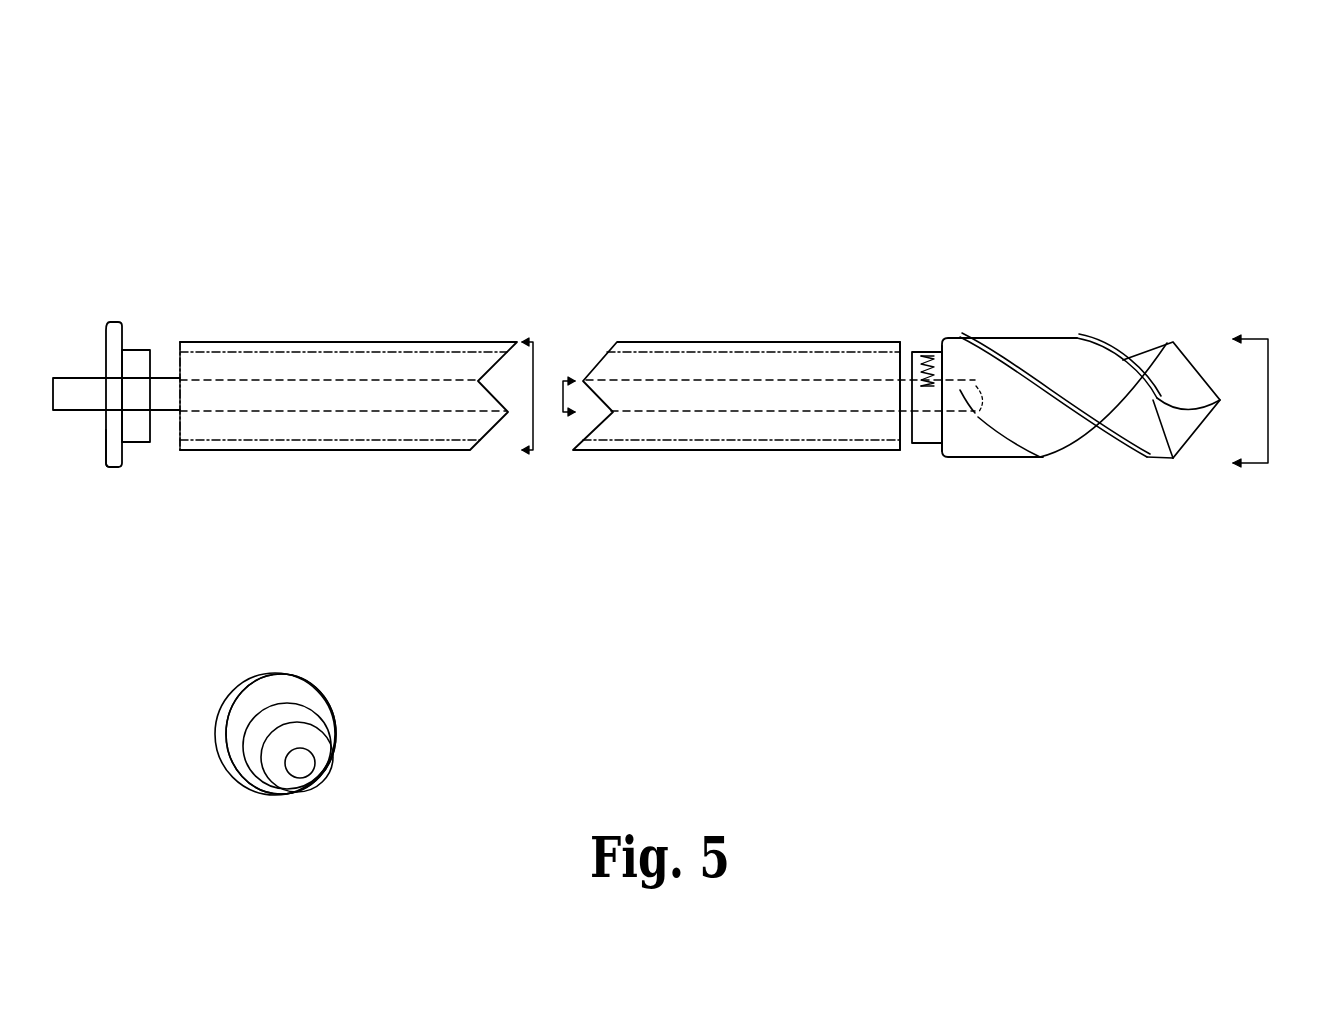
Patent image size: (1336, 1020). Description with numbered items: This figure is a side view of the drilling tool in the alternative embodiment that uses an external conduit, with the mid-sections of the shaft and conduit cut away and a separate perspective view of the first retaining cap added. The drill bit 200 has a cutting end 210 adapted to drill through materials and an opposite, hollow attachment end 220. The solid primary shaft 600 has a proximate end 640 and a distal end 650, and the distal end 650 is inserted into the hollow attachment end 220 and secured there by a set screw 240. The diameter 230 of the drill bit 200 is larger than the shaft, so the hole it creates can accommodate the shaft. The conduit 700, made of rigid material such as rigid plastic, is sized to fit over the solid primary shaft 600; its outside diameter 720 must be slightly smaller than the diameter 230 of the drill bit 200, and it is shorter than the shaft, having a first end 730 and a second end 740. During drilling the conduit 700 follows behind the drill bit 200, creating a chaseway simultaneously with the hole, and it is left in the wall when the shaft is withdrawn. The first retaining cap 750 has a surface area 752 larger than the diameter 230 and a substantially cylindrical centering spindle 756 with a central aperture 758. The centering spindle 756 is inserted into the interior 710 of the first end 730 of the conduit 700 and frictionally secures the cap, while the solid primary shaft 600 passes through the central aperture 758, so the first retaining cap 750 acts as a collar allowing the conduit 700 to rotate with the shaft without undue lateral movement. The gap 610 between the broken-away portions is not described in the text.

The drill bit 200 is at (1105, 445).
The cutting end 210 is at (1172, 356).
The attachment end 220 is at (927, 447).
The diameter of the drill bit 230 is at (1278, 401).
The set screw 240 is at (928, 355).
The solid primary shaft 600 is at (312, 398).
The gap 610 is at (560, 403).
The proximate end 640 is at (67, 395).
The distal end 650 is at (976, 386).
The conduit 700 is at (305, 450).
The interior 710 is at (375, 365).
The outside diameter of the conduit 720 is at (537, 400).
The first end 730 is at (183, 340).
The second end 740 is at (898, 345).
The first retaining cap 750 is at (112, 322).
The surface area 752 is at (110, 445).
The centering spindle 756 is at (133, 445).
The central aperture 758 is at (133, 403).